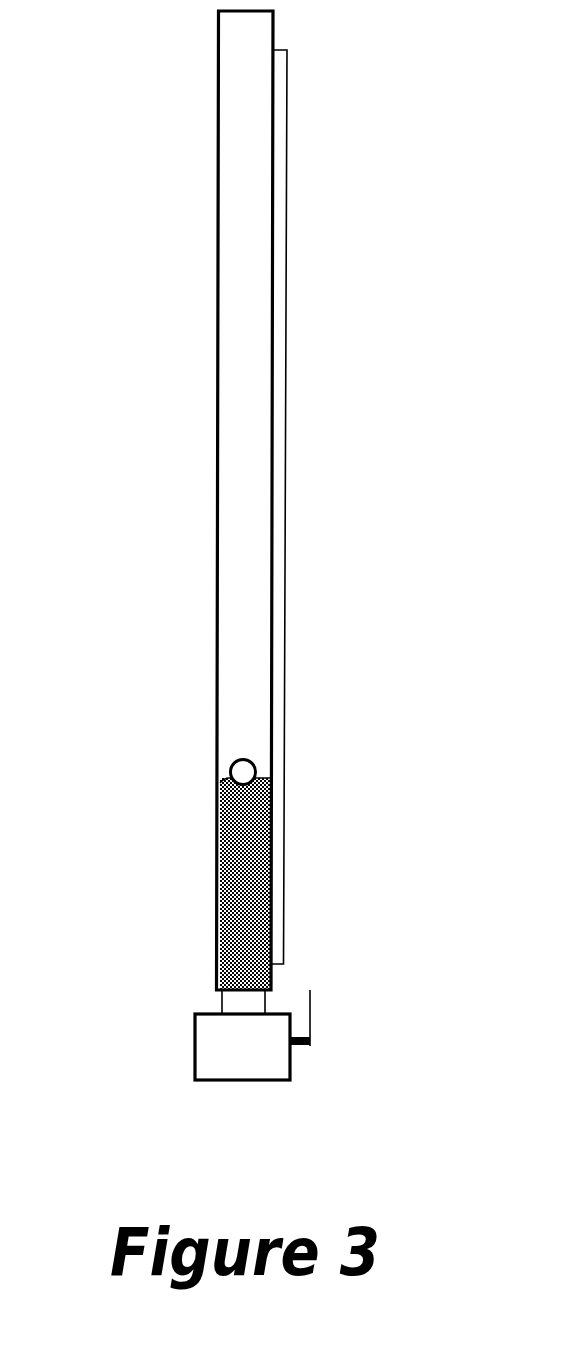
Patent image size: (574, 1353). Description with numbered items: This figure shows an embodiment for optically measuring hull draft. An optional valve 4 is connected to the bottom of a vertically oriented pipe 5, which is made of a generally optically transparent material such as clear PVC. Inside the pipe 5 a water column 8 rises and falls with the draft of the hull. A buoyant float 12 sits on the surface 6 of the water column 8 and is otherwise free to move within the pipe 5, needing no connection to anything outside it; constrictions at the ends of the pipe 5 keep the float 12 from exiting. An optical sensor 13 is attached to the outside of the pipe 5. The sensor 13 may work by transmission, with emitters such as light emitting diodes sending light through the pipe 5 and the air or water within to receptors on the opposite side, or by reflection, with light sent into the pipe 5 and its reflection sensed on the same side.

The valve 4 is at (195, 1028).
The pipe 5 is at (218, 205).
The surface 6 is at (228, 783).
The water column 8 is at (232, 895).
The buoyant float 12 is at (235, 762).
The optical sensor 13 is at (284, 818).